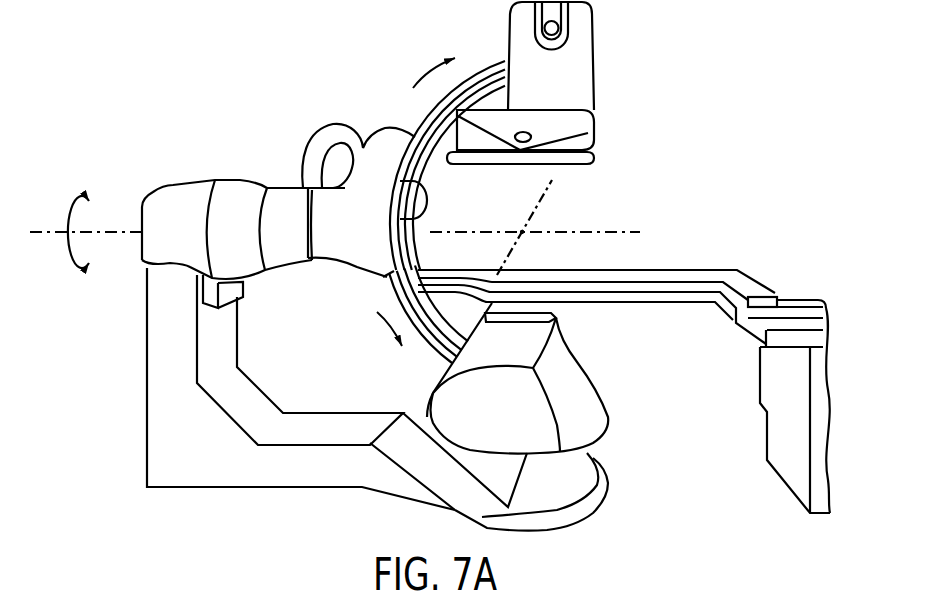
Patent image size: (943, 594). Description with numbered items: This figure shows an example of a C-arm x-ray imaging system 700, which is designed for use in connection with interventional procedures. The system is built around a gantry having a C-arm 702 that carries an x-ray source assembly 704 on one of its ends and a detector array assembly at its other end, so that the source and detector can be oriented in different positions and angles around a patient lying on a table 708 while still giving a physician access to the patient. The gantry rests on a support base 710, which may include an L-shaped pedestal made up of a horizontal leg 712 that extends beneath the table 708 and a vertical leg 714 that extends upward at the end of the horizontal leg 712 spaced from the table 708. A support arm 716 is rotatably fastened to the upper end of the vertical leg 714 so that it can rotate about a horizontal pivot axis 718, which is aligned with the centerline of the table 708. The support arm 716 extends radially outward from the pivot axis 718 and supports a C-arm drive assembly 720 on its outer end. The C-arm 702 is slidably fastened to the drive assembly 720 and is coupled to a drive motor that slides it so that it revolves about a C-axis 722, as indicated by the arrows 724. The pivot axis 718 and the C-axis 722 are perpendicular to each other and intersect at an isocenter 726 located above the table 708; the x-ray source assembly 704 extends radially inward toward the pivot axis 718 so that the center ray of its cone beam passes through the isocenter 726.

The C-arm x-ray imaging system 700 is at (149, 66).
The C-arm 702 is at (406, 120).
The x-ray source assembly 704 is at (594, 388).
The table 708 is at (640, 266).
The support base 710 is at (279, 381).
The horizontal leg 712 is at (368, 412).
The vertical leg 714 is at (596, 143).
The support arm 716 is at (285, 185).
The pivot axis 718 is at (117, 230).
The C-arm drive assembly 720 is at (383, 152).
The C-axis 722 is at (548, 203).
The arrows 724 is at (430, 74).
The isocenter 726 is at (524, 234).